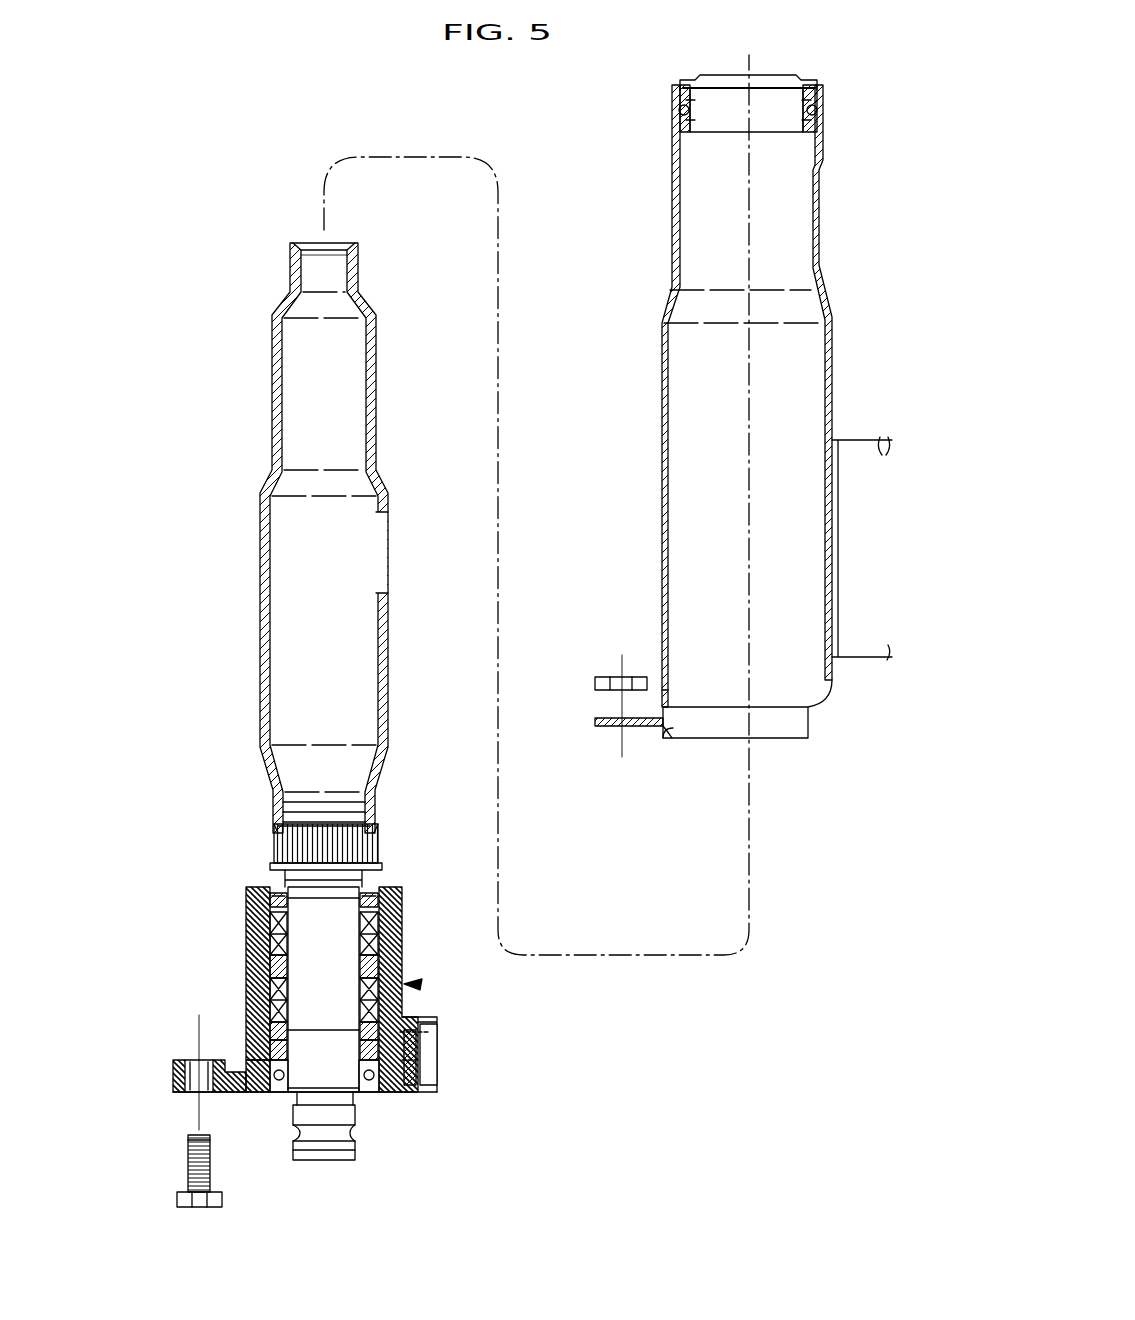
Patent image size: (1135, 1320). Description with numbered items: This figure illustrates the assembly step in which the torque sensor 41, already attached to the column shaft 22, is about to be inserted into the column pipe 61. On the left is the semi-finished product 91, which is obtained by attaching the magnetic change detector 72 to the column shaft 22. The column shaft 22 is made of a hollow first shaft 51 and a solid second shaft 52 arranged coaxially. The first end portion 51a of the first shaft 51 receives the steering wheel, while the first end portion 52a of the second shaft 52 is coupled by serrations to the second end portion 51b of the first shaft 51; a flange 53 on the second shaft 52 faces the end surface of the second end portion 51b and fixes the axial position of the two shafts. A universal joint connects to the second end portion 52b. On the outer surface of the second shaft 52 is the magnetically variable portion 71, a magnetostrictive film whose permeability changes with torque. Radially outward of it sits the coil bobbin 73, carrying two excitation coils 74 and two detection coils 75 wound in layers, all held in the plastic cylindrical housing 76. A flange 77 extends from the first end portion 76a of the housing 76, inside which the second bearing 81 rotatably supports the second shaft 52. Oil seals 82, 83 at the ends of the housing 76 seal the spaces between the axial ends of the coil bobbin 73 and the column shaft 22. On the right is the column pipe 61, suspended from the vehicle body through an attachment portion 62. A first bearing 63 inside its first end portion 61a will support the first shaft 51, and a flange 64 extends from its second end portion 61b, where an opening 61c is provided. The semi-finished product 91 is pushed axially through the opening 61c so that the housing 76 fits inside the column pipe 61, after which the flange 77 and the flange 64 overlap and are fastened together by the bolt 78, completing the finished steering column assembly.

The semi-finished product 91 is at (245, 288).
The column shaft 22 is at (138, 628).
The first shaft 51 is at (259, 643).
The first end portion of the first shaft 51a is at (358, 272).
The second end portion of the first shaft 51b is at (382, 822).
The second shaft 52 is at (303, 977).
The first end portion of the second shaft 52a is at (358, 850).
The second end portion of the second shaft 52b is at (350, 1150).
The flange 53 is at (386, 868).
The magnetic change detector 72 is at (150, 832).
The coil bobbin 73 is at (258, 896).
The excitation coil 74 is at (277, 916).
The detection coil 75 is at (270, 951).
The housing 76 is at (262, 1046).
The first end portion of the housing 76a is at (252, 1093).
The flange 77 is at (174, 1082).
The bolt 78 is at (194, 1180).
The magnetically variable portion 71 is at (342, 952).
The oil seal 82 is at (380, 906).
The oil seal 83 is at (432, 1044).
The second bearing 81 is at (422, 1078).
The torque sensor 41 is at (418, 985).
The column pipe 61 is at (661, 378).
The first end portion of the column pipe 61a is at (673, 130).
The second end portion of the column pipe 61b is at (661, 690).
The opening 61c is at (668, 736).
The attachment portion 62 is at (882, 440).
The first bearing 63 is at (680, 106).
The flange 64 is at (600, 728).